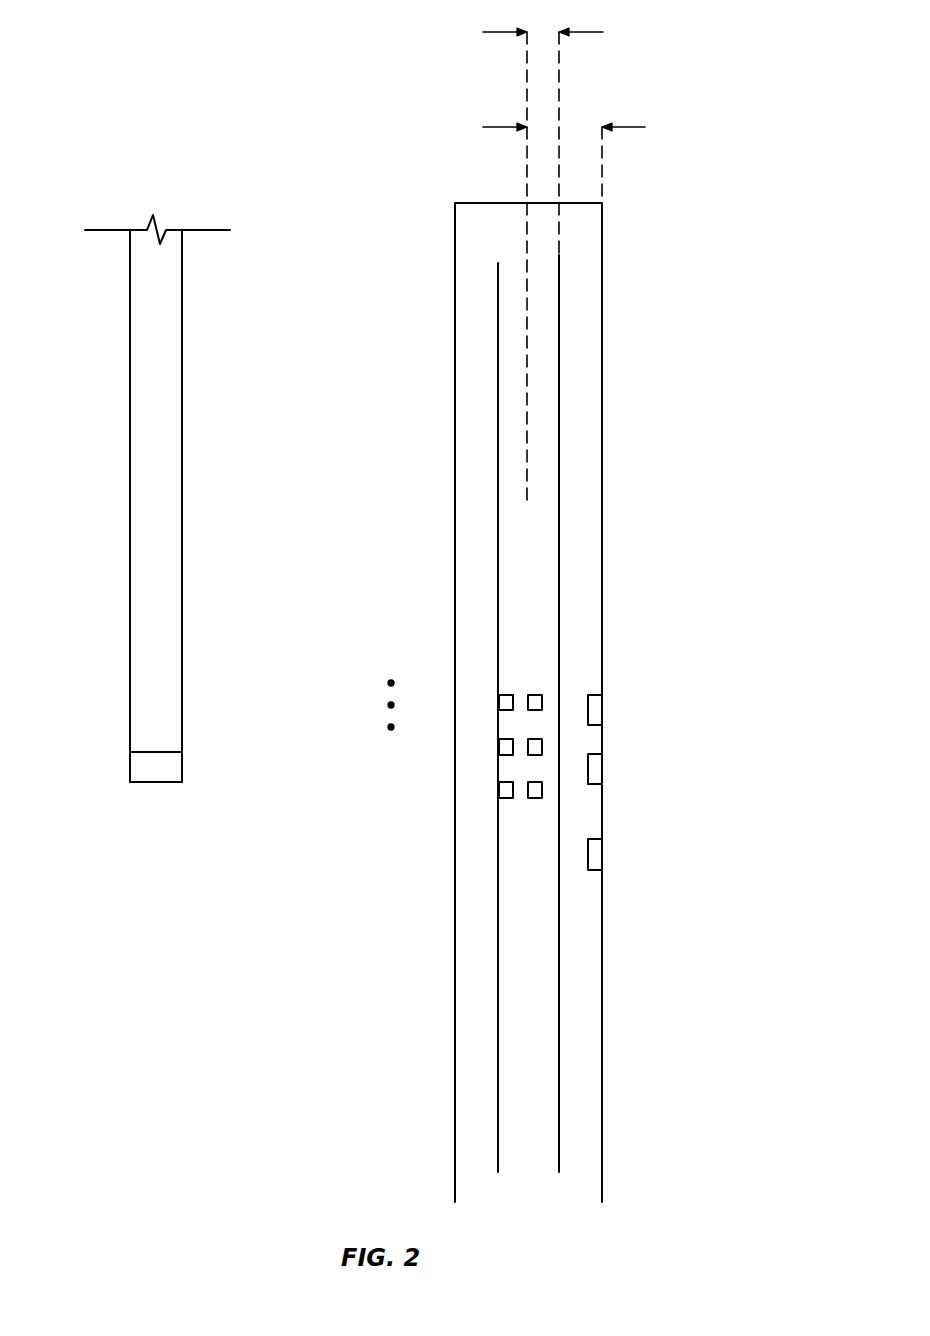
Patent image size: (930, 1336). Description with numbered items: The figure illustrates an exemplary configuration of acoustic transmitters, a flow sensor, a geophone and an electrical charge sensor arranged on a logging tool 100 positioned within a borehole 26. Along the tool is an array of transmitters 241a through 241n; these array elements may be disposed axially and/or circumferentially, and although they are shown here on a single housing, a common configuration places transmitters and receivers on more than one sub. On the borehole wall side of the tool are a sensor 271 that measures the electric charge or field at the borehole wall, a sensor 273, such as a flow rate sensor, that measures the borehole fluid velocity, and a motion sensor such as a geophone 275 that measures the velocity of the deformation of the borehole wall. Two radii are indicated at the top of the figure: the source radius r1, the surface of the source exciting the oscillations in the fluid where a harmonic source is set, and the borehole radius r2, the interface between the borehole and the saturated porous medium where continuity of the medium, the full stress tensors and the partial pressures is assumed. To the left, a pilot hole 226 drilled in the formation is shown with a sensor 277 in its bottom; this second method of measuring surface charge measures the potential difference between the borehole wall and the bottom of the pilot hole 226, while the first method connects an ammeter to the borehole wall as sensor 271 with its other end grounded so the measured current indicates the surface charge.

The pilot hole 226 is at (130, 541).
The sensor 277 is at (168, 767).
The borehole 26 is at (455, 973).
The logging tool 100 is at (492, 577).
The source radius r1 is at (603, 32).
The borehole radius r2 is at (645, 127).
The transmitter 241a is at (506, 703).
The transmitter 241n is at (506, 790).
The sensor 271 is at (597, 711).
The sensor 273 is at (597, 770).
The geophone 275 is at (597, 856).